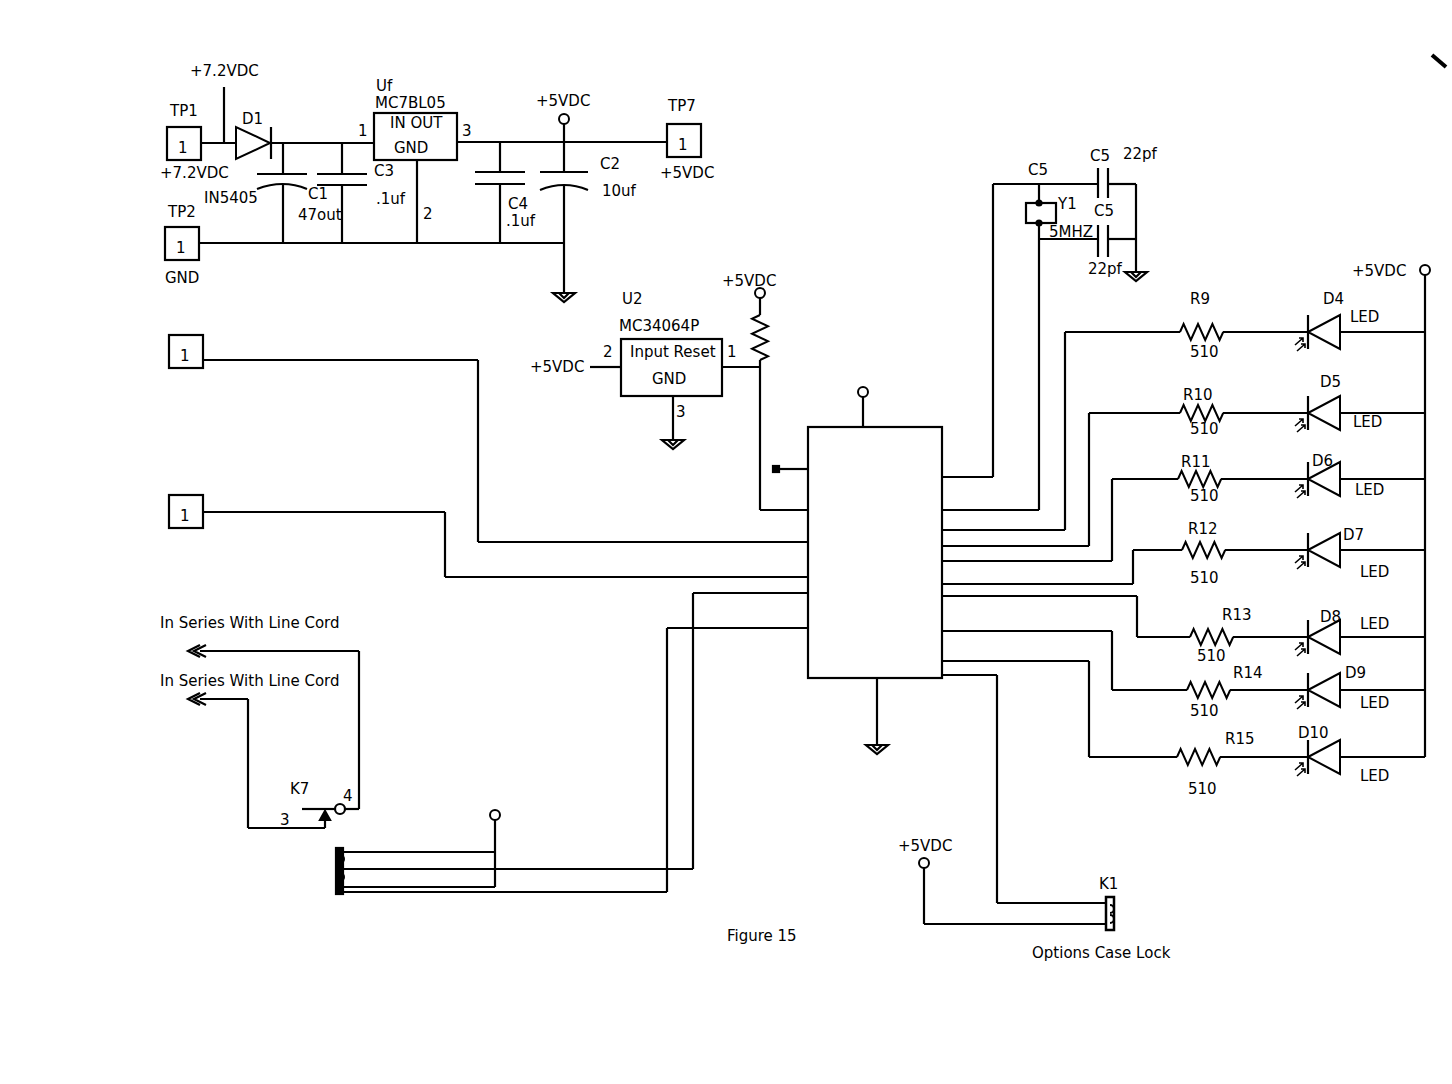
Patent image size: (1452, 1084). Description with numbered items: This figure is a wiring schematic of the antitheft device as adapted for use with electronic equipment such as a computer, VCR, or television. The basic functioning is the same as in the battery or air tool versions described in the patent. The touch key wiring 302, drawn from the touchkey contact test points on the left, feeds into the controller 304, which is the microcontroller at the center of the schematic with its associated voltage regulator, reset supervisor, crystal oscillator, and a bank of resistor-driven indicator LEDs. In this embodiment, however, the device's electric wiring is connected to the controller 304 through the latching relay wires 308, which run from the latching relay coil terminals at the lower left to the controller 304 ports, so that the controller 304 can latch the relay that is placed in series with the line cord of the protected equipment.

The touch key wiring 302 is at (398, 360).
The controller 304 is at (827, 678).
The latching relay wires 308 is at (531, 892).